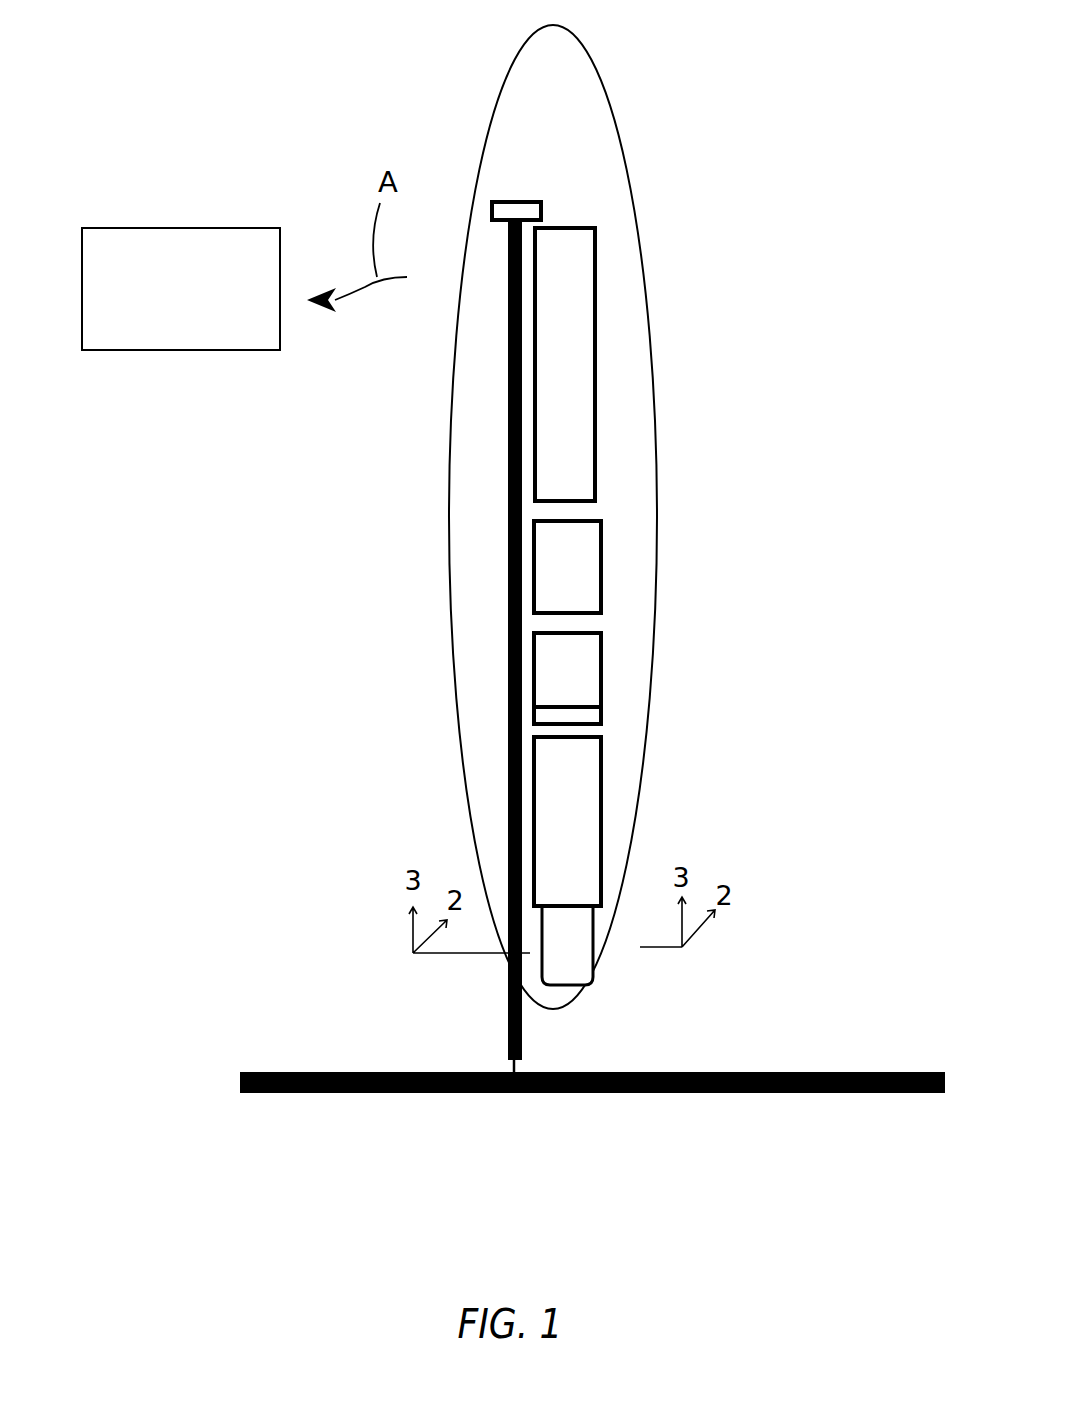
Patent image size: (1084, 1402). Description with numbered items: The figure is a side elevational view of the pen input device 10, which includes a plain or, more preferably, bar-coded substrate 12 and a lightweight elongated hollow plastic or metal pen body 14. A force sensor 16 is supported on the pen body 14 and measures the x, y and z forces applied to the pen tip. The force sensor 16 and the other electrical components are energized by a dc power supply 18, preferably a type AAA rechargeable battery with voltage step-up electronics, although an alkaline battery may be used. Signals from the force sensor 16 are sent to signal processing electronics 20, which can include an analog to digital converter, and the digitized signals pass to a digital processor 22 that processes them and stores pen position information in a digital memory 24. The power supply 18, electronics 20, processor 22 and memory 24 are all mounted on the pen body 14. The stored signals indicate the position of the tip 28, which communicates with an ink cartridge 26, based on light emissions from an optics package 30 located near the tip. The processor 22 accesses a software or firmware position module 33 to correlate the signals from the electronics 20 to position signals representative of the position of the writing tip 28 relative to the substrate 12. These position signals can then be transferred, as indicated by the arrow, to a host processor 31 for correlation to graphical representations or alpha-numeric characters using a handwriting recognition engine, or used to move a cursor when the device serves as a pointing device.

The pen input device 10 is at (888, 163).
The substrate 12 is at (827, 1093).
The pen body 14 is at (622, 160).
The force sensor 16 is at (511, 200).
The dc power supply 18 is at (583, 400).
The signal processing electronics 20 is at (580, 798).
The digital processor 22 is at (587, 673).
The digital memory 24 is at (582, 578).
The ink cartridge 26 is at (508, 573).
The tip 28 is at (505, 1068).
The optics package 30 is at (567, 960).
The host processor 31 is at (132, 228).
The position module 33 is at (597, 715).